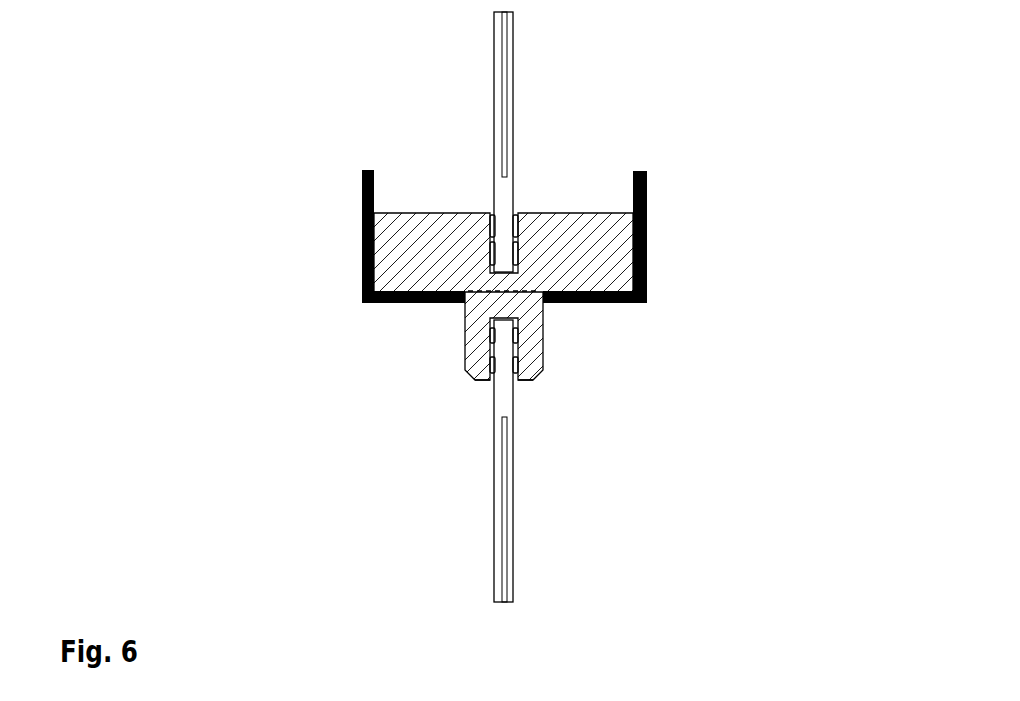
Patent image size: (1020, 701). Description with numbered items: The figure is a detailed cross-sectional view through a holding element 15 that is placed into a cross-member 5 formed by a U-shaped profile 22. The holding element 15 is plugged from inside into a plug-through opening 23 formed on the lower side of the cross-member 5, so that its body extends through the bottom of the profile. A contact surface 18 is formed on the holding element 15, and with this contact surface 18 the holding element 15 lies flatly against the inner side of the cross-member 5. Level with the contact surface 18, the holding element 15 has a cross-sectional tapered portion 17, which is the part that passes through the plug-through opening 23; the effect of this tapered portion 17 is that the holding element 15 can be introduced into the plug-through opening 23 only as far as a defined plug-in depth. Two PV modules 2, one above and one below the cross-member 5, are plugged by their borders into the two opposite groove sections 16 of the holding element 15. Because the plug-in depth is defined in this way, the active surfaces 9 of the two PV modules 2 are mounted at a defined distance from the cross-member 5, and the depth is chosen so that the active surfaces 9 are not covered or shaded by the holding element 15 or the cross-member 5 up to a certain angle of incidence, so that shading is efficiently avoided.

The PV module 2 is at (515, 85).
The active surface 9 is at (505, 30).
The cross-member 5 is at (647, 187).
The U-shaped profile 22 is at (647, 265).
The contact surface 18 is at (410, 292).
The cross-sectional tapered portion 17 is at (460, 308).
The plug-through opening 23 is at (468, 298).
The holding element 15 is at (530, 370).
The groove section 16 is at (492, 220).